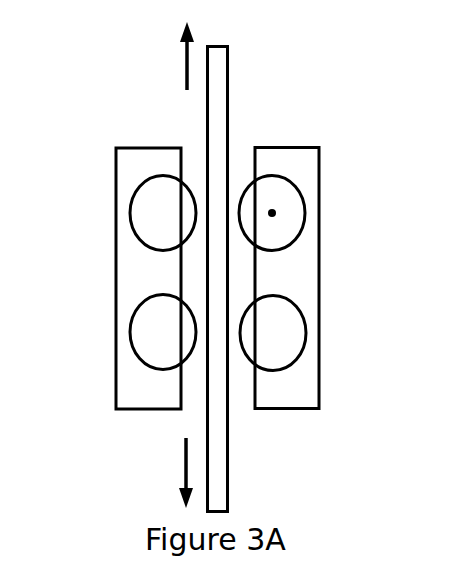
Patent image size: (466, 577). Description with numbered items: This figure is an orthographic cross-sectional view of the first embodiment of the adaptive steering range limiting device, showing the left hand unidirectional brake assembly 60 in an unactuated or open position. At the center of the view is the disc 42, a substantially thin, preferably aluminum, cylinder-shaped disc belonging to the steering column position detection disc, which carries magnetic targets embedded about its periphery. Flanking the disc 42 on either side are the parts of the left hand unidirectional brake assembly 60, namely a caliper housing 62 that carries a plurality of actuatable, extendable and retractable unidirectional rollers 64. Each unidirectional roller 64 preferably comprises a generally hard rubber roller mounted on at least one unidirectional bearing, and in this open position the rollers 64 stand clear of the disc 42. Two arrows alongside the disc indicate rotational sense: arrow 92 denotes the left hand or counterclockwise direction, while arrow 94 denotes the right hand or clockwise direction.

The disc 42 is at (263, 267).
The left hand unidirectional brake assembly 60 is at (173, 257).
The caliper housing 62 is at (217, 273).
The unidirectional rollers 64 is at (319, 186).
The left hand direction indication arrow 92 is at (151, 473).
The right hand direction indication arrow 94 is at (150, 56).